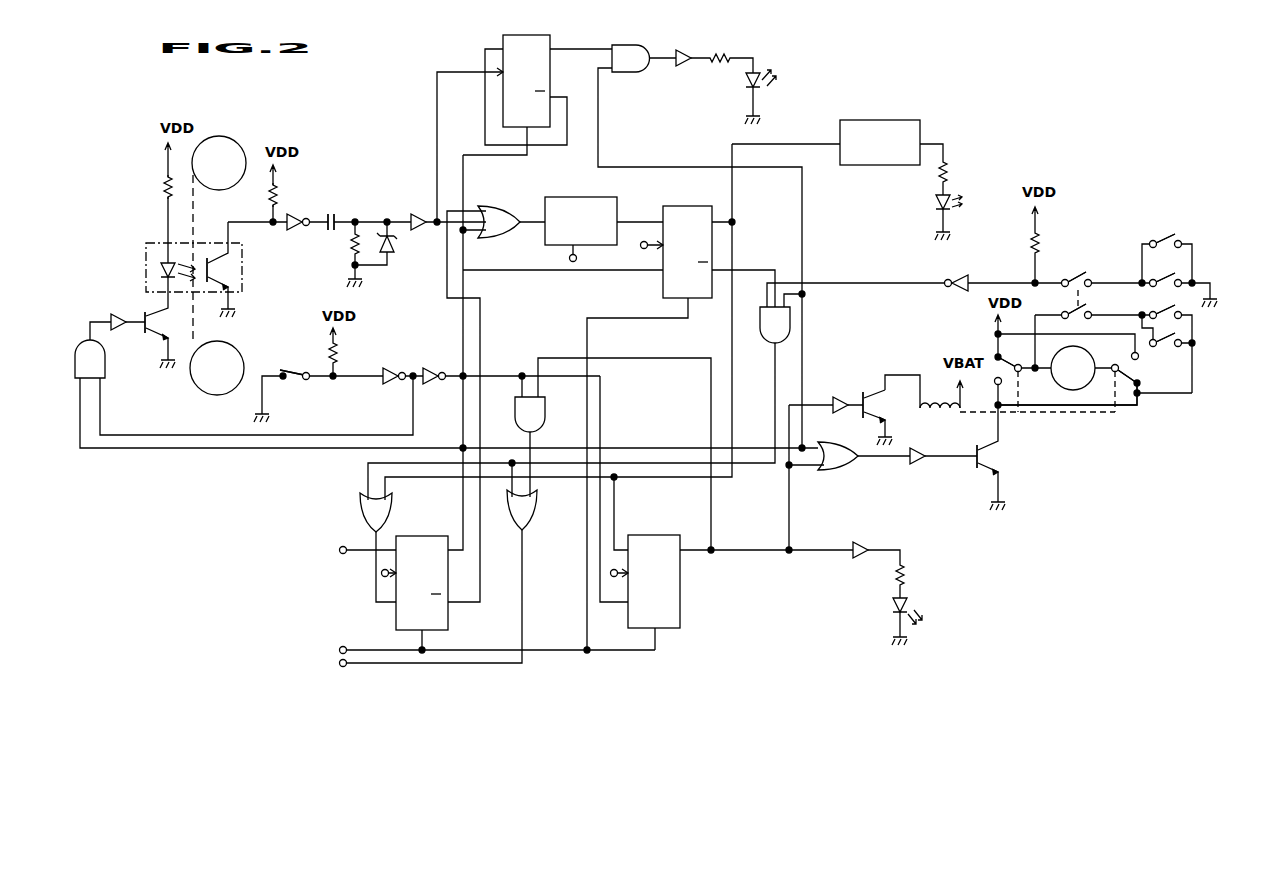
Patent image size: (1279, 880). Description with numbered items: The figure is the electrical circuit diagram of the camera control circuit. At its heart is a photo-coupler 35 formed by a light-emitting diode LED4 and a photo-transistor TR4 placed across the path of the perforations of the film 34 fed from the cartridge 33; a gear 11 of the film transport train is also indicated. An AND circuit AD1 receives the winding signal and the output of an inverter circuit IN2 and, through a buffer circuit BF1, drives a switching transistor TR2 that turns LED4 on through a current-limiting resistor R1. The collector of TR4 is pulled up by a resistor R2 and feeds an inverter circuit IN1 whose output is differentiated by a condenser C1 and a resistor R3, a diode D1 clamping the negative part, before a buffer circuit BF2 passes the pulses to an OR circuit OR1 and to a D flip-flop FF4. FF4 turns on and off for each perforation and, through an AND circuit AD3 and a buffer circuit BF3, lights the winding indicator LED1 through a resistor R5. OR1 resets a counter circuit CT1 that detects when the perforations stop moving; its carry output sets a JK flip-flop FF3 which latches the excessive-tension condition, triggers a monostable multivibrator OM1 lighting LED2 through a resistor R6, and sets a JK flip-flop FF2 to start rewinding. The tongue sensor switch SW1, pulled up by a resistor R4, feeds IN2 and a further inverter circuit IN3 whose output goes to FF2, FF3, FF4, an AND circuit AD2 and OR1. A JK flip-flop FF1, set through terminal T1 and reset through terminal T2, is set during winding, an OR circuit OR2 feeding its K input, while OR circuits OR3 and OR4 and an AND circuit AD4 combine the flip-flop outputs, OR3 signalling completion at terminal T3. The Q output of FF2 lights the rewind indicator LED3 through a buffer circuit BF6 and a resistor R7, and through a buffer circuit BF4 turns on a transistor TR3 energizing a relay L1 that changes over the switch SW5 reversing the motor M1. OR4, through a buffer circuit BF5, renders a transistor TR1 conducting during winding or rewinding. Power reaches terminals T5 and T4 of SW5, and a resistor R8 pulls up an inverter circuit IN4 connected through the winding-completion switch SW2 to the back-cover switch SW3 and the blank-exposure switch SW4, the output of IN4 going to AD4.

The gear 11 is at (236, 348).
The cartridge 33 is at (238, 142).
The film 34 is at (194, 197).
The photo-coupler 35 is at (242, 250).
The resistor R1 is at (157, 187).
The resistor R2 is at (286, 196).
The resistor R3 is at (345, 245).
The resistor R4 is at (345, 353).
The resistor R5 is at (721, 47).
The resistor R6 is at (956, 172).
The resistor R7 is at (912, 576).
The resistor R8 is at (1047, 243).
The light-emitting diode LED1 is at (759, 72).
The light-emitting diode LED2 is at (936, 205).
The light-emitting diode LED3 is at (910, 606).
The light-emitting diode LED4 is at (158, 268).
The transistor TR1 is at (1005, 456).
The transistor TR2 is at (175, 324).
The transistor TR3 is at (890, 406).
The photo-transistor TR4 is at (236, 272).
The buffer circuit BF1 is at (118, 330).
The buffer circuit BF2 is at (419, 213).
The buffer circuit BF3 is at (685, 66).
The buffer circuit BF4 is at (838, 396).
The buffer circuit BF5 is at (916, 464).
The buffer circuit BF6 is at (862, 542).
The AND circuit AD1 is at (105, 368).
The AND circuit AD2 is at (545, 410).
The AND circuit AD3 is at (640, 72).
The AND circuit AD4 is at (763, 343).
The OR circuit OR1 is at (495, 206).
The OR circuit OR2 is at (360, 512).
The OR circuit OR3 is at (537, 500).
The OR circuit OR4 is at (840, 470).
The inverter circuit IN1 is at (291, 228).
The inverter circuit IN2 is at (393, 363).
The inverter circuit IN3 is at (435, 363).
The inverter circuit IN4 is at (964, 272).
The JK flip-flop FF1 is at (430, 536).
The JK flip-flop FF2 is at (682, 615).
The JK flip-flop FF3 is at (688, 206).
The D flip-flop FF4 is at (551, 62).
The counter circuit CT1 is at (565, 197).
The monostable multivibrator OM1 is at (897, 120).
The condenser C1 is at (333, 212).
The diode D1 is at (398, 245).
The relay L1 is at (940, 420).
The electric motor M1 is at (1073, 368).
The switch SW1 is at (293, 382).
The switch SW2 is at (1078, 279).
The switch SW3 is at (1175, 280).
The switch SW4 is at (1170, 244).
The switch SW5 is at (1127, 400).
The terminal T1 is at (334, 553).
The terminal T2 is at (334, 648).
The terminal T3 is at (334, 669).
The terminal T4 is at (996, 354).
The terminal T5 is at (995, 384).